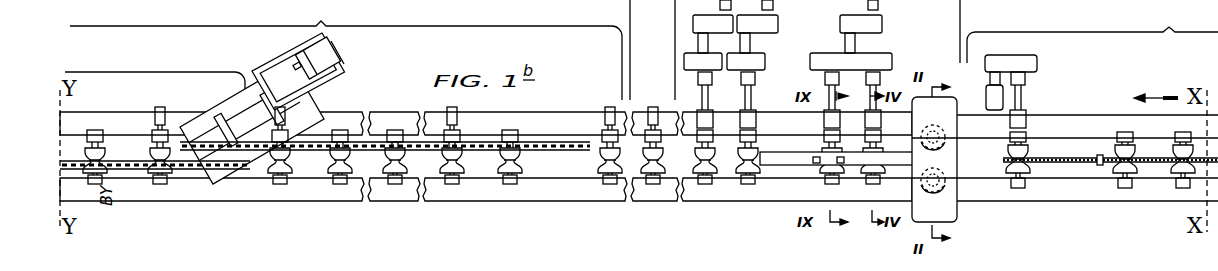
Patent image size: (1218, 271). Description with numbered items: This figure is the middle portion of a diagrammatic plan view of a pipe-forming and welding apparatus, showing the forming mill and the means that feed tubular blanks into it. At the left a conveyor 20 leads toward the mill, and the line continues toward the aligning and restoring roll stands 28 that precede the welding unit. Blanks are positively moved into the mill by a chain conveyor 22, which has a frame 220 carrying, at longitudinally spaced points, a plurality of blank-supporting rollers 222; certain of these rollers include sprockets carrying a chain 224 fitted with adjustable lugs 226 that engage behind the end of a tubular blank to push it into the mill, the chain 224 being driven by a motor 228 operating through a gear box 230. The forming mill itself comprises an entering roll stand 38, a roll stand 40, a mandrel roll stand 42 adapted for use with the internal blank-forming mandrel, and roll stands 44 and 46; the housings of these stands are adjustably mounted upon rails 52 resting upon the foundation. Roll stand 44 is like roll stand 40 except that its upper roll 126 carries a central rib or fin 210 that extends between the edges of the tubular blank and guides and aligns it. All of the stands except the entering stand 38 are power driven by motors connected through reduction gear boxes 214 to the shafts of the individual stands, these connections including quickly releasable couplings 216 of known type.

The conveyor 20 is at (343, 92).
The chain conveyor 22 is at (1087, 69).
The aligning and restoring roll stands 28 is at (486, 191).
The entering roll stand 38 is at (953, 211).
The roll stand 40 is at (863, 185).
The mandrel roll stand 42 is at (827, 183).
The roll stand 44 is at (747, 187).
The roll stand 46 is at (702, 187).
The rails 52 is at (898, 117).
The upper roll 126 is at (743, 157).
The central rib or fin 210 is at (750, 158).
The reduction gear boxes 214 is at (843, 21).
The quickly releasable couplings 216 is at (822, 117).
The frame 220 is at (1157, 198).
The blank-supporting rollers 222 is at (1117, 178).
The chain 224 is at (1040, 163).
The adjustable lugs 226 is at (1098, 157).
The motor 228 is at (1000, 97).
The gear box 230 is at (1030, 63).